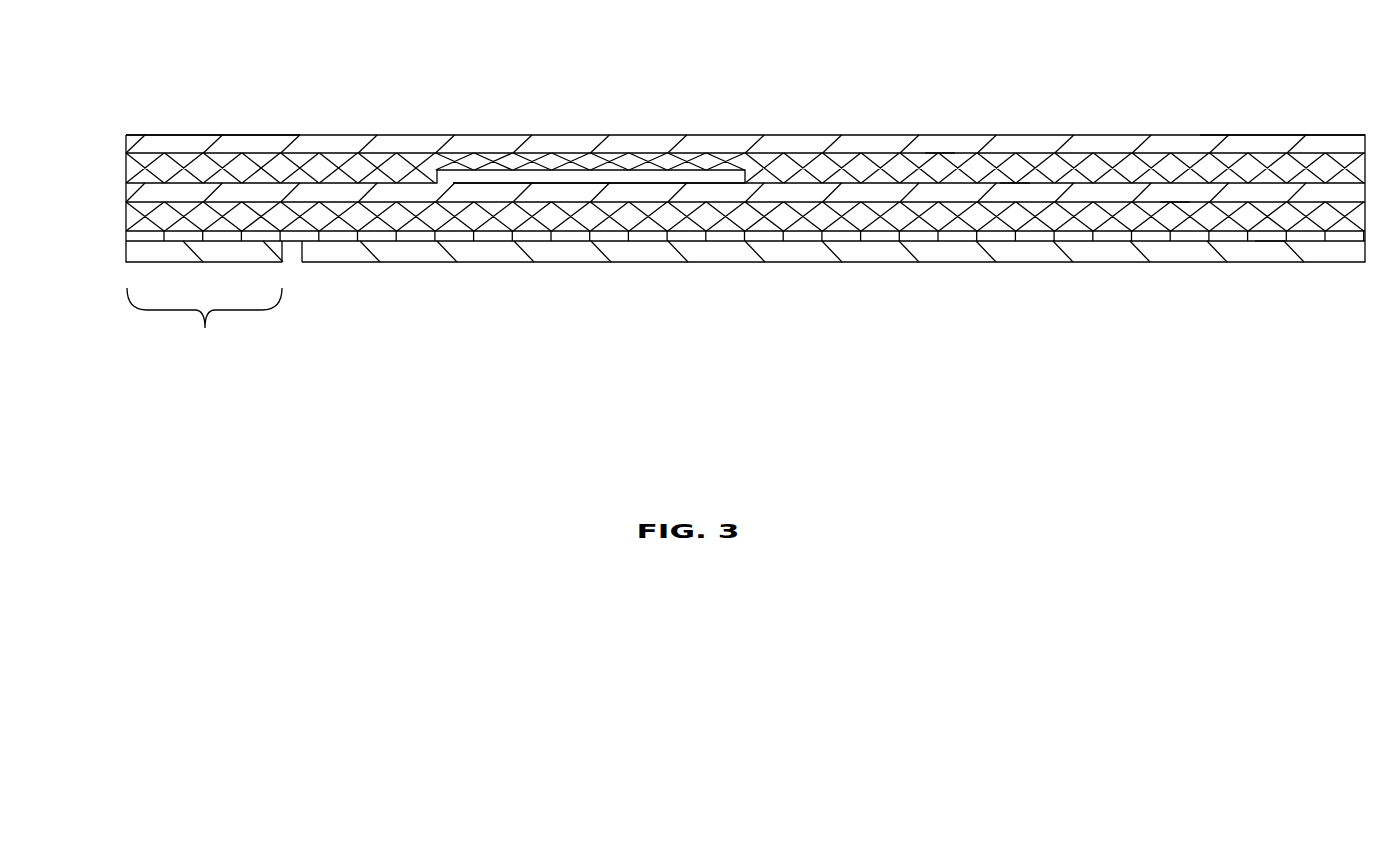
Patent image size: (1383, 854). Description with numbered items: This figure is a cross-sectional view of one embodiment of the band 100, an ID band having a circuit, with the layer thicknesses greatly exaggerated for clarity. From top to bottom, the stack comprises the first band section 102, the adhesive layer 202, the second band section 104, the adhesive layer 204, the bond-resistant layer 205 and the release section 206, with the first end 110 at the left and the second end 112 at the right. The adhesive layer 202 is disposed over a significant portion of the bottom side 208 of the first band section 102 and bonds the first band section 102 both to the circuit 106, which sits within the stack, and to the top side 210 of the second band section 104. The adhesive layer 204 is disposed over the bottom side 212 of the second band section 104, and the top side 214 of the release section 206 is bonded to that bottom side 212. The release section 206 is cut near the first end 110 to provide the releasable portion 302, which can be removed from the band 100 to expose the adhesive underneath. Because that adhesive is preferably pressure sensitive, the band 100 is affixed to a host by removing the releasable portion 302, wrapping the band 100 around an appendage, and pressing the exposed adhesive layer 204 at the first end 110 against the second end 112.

The band 100 is at (437, 410).
The first band section 102 is at (126, 136).
The second band section 104 is at (125, 193).
The circuit 106 is at (583, 177).
The first end 110 is at (245, 92).
The second end 112 is at (1248, 93).
The adhesive layer 202 is at (125, 163).
The adhesive layer 204 is at (125, 218).
The bond-resistant layer 205 is at (125, 240).
The release section 206 is at (125, 255).
The bottom side 208 is at (938, 152).
The top side 210 is at (1012, 183).
The bottom side 212 is at (1173, 203).
The top side 214 is at (1268, 243).
The releasable portion 302 is at (204, 327).